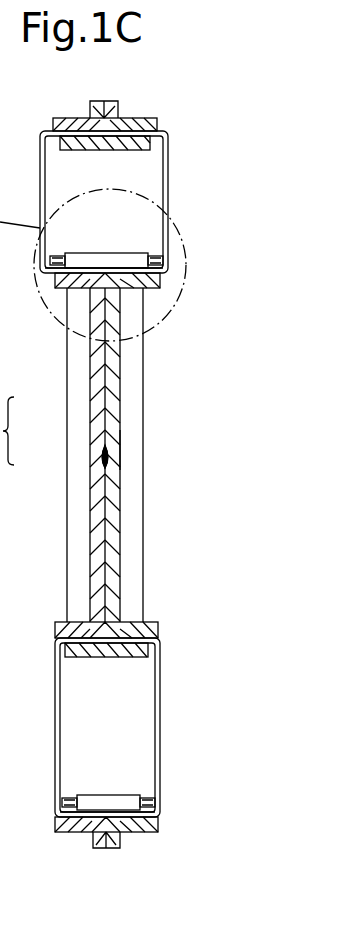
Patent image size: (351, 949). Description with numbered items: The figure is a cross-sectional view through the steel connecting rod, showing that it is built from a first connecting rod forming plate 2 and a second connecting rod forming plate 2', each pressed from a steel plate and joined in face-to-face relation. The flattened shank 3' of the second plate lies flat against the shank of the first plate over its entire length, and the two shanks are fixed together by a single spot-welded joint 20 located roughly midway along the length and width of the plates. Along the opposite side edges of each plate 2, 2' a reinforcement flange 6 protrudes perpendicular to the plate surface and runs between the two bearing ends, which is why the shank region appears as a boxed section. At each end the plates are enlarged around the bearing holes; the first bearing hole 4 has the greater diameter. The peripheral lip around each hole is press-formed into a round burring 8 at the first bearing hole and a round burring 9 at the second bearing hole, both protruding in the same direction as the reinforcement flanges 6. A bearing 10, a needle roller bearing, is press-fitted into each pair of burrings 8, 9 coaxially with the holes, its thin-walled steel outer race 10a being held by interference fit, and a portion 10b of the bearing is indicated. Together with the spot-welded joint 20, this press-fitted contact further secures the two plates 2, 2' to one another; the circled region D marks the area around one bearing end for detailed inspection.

The first connecting rod forming plate 2 is at (61, 455).
The second connecting rod forming plate 2' is at (65, 454).
The flattened shank 3' is at (149, 462).
The first bearing hole 4 is at (82, 658).
The reinforcement flange 6 is at (73, 570).
The round burring 8 is at (58, 285).
The round burring 9 is at (60, 624).
The bearing 10 is at (128, 252).
The outer race 10a is at (158, 276).
The ring portion 10b is at (100, 258).
The spot-welded joint 20 is at (114, 445).
The detail region D is at (160, 330).